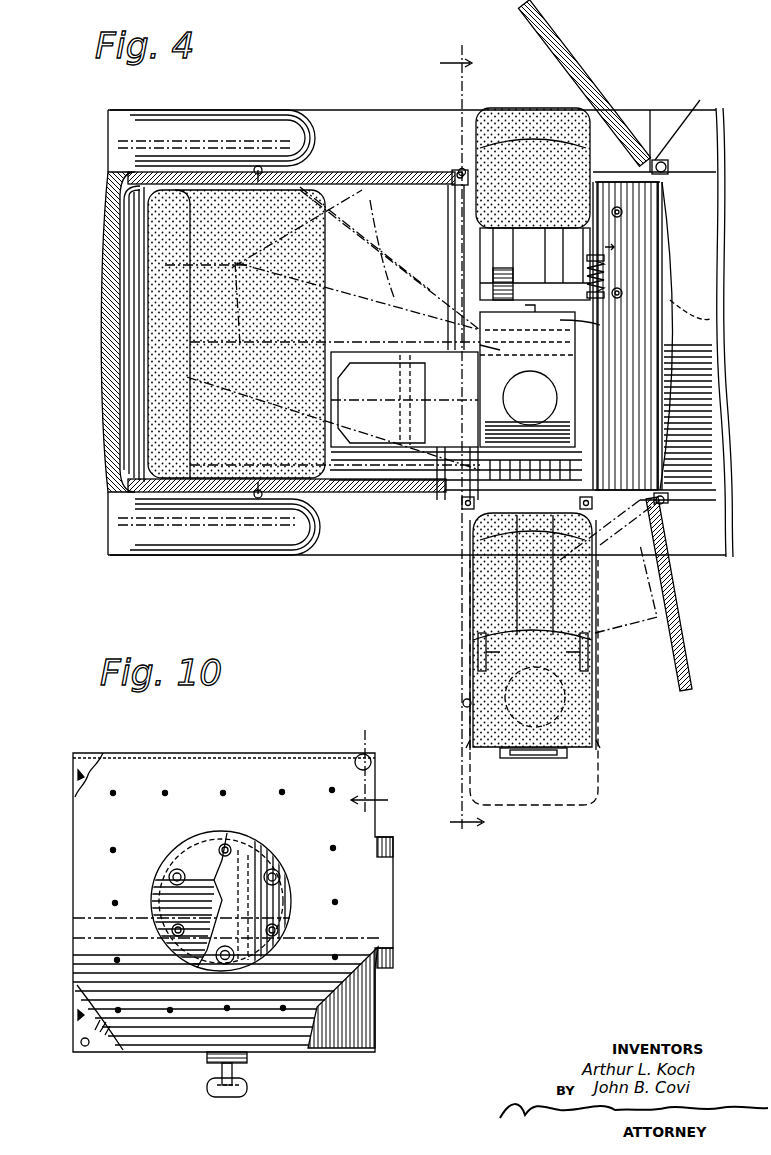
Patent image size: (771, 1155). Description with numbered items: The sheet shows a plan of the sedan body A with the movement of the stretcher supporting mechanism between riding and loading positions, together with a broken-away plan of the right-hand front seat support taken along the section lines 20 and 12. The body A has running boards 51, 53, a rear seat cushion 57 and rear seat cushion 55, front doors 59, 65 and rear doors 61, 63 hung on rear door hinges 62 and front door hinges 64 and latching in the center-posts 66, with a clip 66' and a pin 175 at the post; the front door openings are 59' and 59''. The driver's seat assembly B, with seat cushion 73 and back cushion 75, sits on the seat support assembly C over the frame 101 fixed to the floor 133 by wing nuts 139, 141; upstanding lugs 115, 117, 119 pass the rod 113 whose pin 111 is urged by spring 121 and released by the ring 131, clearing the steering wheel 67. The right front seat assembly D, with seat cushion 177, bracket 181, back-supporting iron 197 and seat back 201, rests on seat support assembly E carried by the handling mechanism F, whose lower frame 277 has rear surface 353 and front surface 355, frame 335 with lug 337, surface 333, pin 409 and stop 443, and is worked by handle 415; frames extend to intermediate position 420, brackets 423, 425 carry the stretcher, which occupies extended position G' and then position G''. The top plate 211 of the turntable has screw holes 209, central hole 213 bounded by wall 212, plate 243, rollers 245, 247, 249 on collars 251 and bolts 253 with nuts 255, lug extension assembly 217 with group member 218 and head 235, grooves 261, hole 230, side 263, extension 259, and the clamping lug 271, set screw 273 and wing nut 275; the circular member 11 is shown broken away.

In FIG. 4, the section line 20 is at (473, 442).
In FIG. 4, the running board 51 is at (305, 110).
In FIG. 4, the rear door hinge 62 is at (258, 166).
In FIG. 4, the running board 53 is at (312, 553).
In FIG. 4, the front door 59 is at (291, 158).
In FIG. 4, the front door 65 is at (318, 490).
In FIG. 4, the clip 66' is at (433, 164).
In FIG. 4, the pin 175 is at (460, 168).
In FIG. 4, the sedan body A is at (124, 450).
In FIG. 4, the rear seat cushion 57 is at (152, 393).
In FIG. 4, the rear seat cushion 55 is at (305, 228).
In FIG. 4, the lower frame 277 is at (400, 340).
In FIG. 4, the rear surface 353 is at (330, 372).
In FIG. 4, the front door opening 59'' is at (628, 283).
In FIG. 4, the steering wheel 67 is at (650, 222).
In FIG. 4, the upstanding lug 119 is at (705, 160).
In FIG. 4, the ring 131 is at (687, 123).
In FIG. 4, the floor 133 is at (710, 318).
In FIG. 4, the upstanding lug 115 is at (668, 350).
In FIG. 4, the front door opening 59' is at (715, 431).
In FIG. 4, the wing nut 141 is at (622, 210).
In FIG. 4, the rod 113 is at (640, 248).
In FIG. 4, the seat support assembly C is at (616, 252).
In FIG. 4, the upstanding lug 117 is at (610, 268).
In FIG. 4, the compression spring 121 is at (622, 293).
In FIG. 4, the wing nut 139 is at (630, 312).
In FIG. 4, the pin 111 is at (589, 325).
In FIG. 4, the back cushion 75 is at (505, 115).
In FIG. 4, the driver's seat assembly B is at (532, 129).
In FIG. 4, the seat cushion 73 is at (572, 142).
In FIG. 4, the rear door 61 is at (590, 58).
In FIG. 4, the front door hinge 64 is at (668, 162).
In FIG. 4, the frame 101 is at (490, 238).
In FIG. 4, the handling mechanism F is at (362, 352).
In FIG. 4, the frame 335 is at (455, 380).
In FIG. 4, the lug 337 is at (490, 397).
In FIG. 4, the surface 333 is at (480, 415).
In FIG. 4, the stop 443 is at (580, 360).
In FIG. 4, the pin 409 is at (575, 382).
In FIG. 4, the front surface 355 is at (585, 408).
In FIG. 4, the center-post 66 is at (500, 499).
In FIG. 4, the intermediate position 420 is at (462, 508).
In FIG. 4, the bracket 423 is at (468, 555).
In FIG. 4, the seat back 201 is at (478, 588).
In FIG. 4, the right front seat assembly D is at (600, 712).
In FIG. 4, the seat cushion 177 is at (598, 690).
In FIG. 4, the bracket 181 is at (520, 650).
In FIG. 4, the back-supporting iron 197 is at (478, 660).
In FIG. 4, the plate 243 is at (505, 688).
In FIG. 10, the plate 243 is at (195, 848).
In FIG. 4, the handle member 415 is at (462, 703).
In FIG. 4, the head 235 is at (600, 748).
In FIG. 10, the head 235 is at (372, 762).
In FIG. 4, the group member 218 is at (540, 758).
In FIG. 10, the group member 218 is at (395, 912).
In FIG. 4, the extension 259 is at (505, 753).
In FIG. 10, the extension 259 is at (395, 960).
In FIG. 4, the extended position G' is at (554, 682).
In FIG. 4, the stretcher position G'' is at (657, 594).
In FIG. 4, the bracket 425 is at (610, 540).
In FIG. 4, the rear door 63 is at (690, 580).
In FIG. 10, the side 263 is at (140, 753).
In FIG. 10, the lug extension assembly 217 is at (392, 864).
In FIG. 10, the seat support assembly E is at (386, 893).
In FIG. 10, the section line 12 is at (359, 762).
In FIG. 10, the groove 261 is at (75, 773).
In FIG. 10, the hole 230 is at (85, 1046).
In FIG. 10, the top plate 211 is at (300, 1035).
In FIG. 10, the circular member 11 is at (150, 855).
In FIG. 10, the roller 249 is at (170, 878).
In FIG. 10, the nut 255 is at (224, 842).
In FIG. 10, the roller 247 is at (280, 873).
In FIG. 10, the wall 212 is at (290, 900).
In FIG. 10, the central hole 213 is at (280, 930).
In FIG. 10, the bolt 253 is at (242, 916).
In FIG. 10, the roller 245 is at (235, 960).
In FIG. 10, the collar 251 is at (215, 968).
In FIG. 10, the hole 209 is at (113, 793).
In FIG. 10, the lug 271 is at (250, 1060).
In FIG. 10, the set screw 273 is at (220, 1077).
In FIG. 10, the wing nut 275 is at (228, 1100).